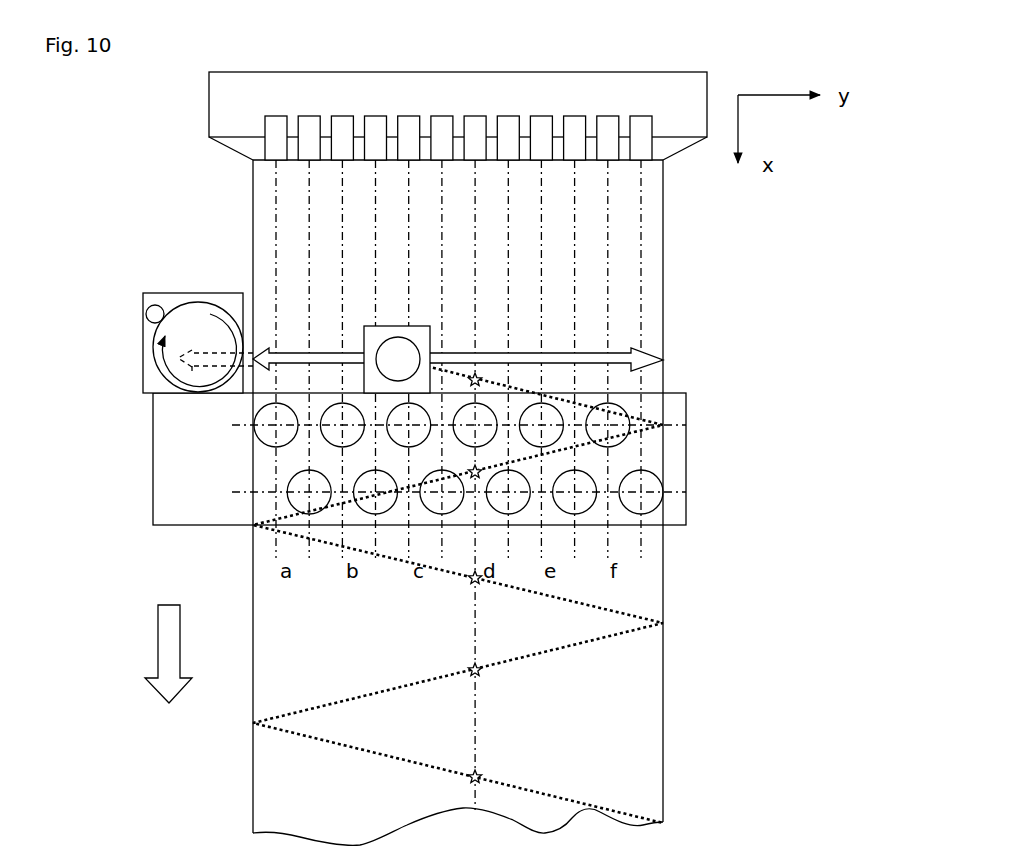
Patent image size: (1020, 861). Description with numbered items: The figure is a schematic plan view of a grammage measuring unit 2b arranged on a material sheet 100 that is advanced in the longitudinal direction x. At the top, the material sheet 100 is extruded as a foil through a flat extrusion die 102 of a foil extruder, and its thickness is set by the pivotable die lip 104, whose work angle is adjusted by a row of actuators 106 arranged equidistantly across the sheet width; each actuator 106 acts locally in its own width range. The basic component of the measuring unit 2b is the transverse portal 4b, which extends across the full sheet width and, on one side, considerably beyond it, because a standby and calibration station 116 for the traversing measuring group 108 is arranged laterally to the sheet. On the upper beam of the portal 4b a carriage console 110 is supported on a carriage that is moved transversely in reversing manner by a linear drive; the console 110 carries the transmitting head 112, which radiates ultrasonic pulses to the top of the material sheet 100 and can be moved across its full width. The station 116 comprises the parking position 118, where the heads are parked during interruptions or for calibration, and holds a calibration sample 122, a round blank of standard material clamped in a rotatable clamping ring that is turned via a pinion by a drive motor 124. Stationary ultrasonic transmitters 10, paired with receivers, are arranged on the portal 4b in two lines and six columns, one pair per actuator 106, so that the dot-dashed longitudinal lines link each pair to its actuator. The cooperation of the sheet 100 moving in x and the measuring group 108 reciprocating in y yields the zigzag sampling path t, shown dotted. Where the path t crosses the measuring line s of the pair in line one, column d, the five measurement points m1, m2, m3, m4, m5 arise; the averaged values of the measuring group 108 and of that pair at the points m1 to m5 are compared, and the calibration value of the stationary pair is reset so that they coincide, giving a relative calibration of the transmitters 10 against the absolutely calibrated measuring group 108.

The material sheet 100 is at (652, 213).
The flat extrusion die 102 is at (683, 98).
The pivotable die lip 104 is at (248, 145).
The actuators 106 is at (276, 133).
The measuring group 108 is at (362, 318).
The carriage console 110 is at (388, 332).
The transmitting head 112 is at (398, 359).
The standby and calibration station 116 is at (127, 406).
The parking position 118 is at (143, 357).
The calibration sample 122 is at (190, 320).
The drive motor 124 is at (146, 316).
The grammage measuring unit 2b is at (127, 550).
The transverse portal 4b is at (673, 473).
The ultrasonic transmitters 10 is at (622, 447).
The measurement point m1 is at (478, 378).
The measurement point m2 is at (477, 475).
The measurement point m3 is at (473, 583).
The measurement point m4 is at (479, 672).
The measurement point m5 is at (480, 775).
The measuring line s is at (475, 742).
The sampling path t is at (297, 735).